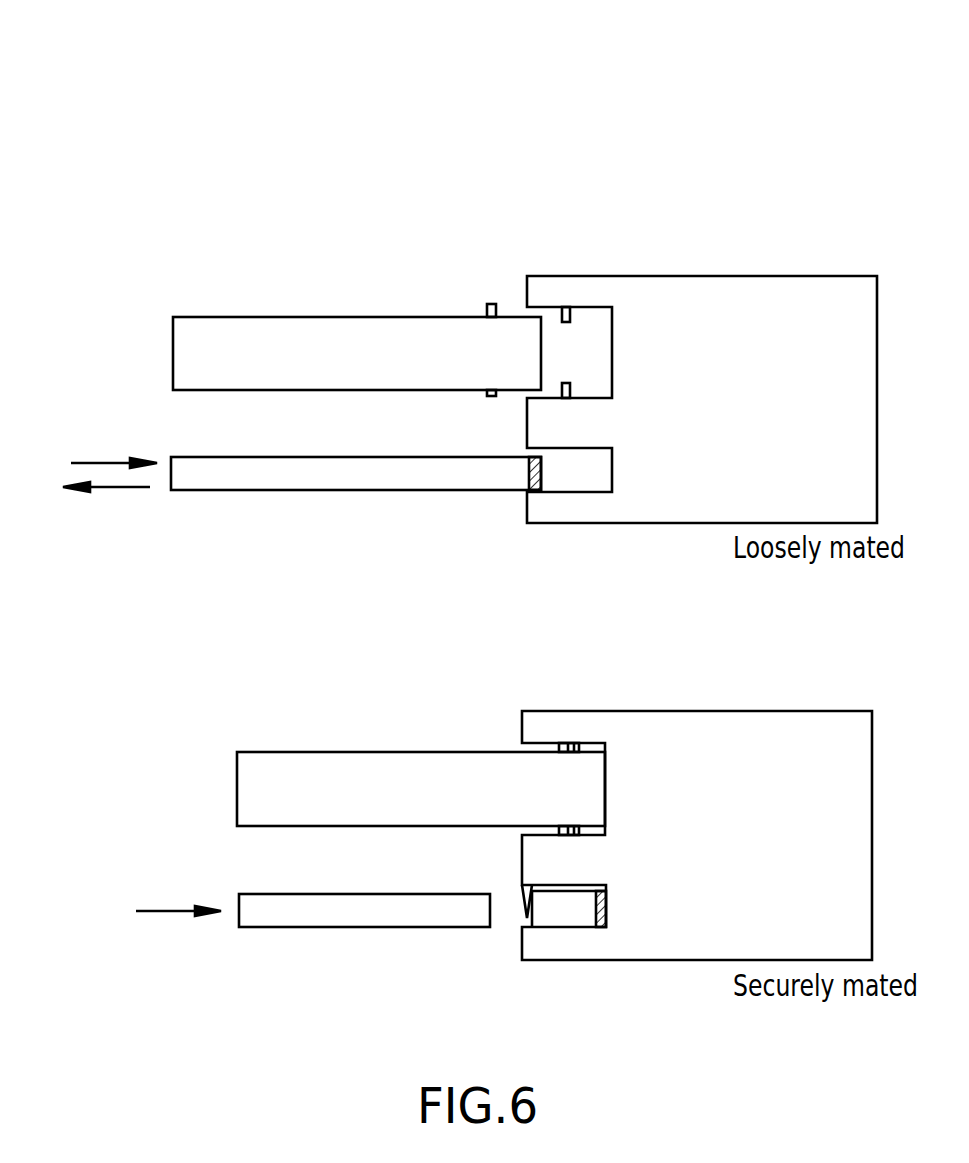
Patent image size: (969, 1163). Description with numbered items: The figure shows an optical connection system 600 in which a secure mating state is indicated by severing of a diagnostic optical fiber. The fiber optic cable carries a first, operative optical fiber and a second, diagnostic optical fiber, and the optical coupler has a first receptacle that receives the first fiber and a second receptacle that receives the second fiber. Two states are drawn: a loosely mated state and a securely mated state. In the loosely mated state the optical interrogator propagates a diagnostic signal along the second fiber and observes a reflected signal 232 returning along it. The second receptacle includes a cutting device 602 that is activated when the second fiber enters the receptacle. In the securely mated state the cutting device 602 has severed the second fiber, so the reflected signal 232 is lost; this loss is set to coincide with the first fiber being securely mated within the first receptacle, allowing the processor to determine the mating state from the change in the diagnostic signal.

The optical connection system 600 is at (798, 131).
The reflected signal 232 is at (121, 490).
The cutting device 602 is at (526, 916).